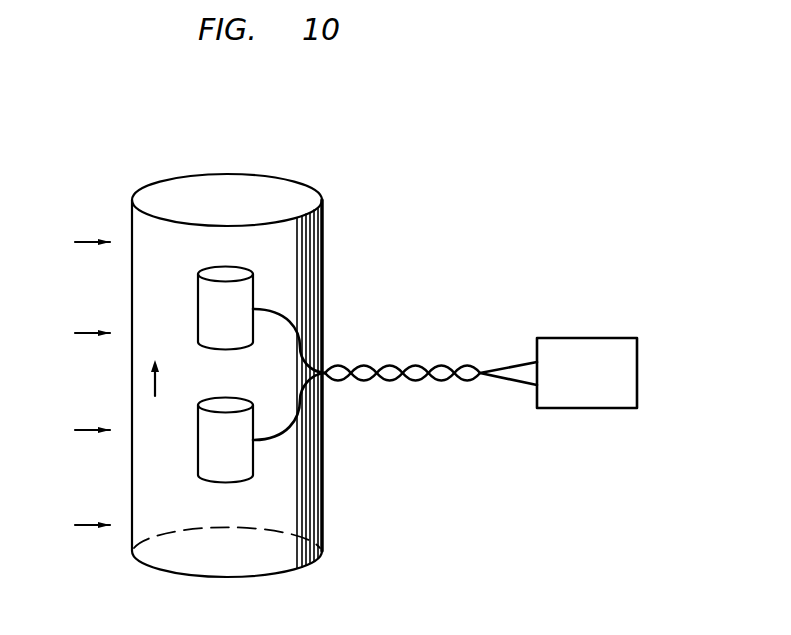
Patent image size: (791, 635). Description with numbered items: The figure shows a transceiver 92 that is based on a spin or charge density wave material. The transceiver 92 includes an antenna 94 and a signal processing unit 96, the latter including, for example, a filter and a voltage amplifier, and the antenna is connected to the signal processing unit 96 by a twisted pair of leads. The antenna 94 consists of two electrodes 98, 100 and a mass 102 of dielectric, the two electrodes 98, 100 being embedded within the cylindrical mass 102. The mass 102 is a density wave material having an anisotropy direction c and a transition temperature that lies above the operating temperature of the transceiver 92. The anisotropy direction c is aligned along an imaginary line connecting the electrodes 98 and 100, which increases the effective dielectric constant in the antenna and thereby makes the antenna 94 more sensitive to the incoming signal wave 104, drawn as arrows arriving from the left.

The transceiver 92 is at (407, 155).
The antenna 94 is at (265, 177).
The signal processing unit 96 is at (600, 388).
The electrode 98 is at (221, 348).
The electrode 100 is at (221, 482).
The mass of dielectric 102 is at (245, 212).
The incoming signal wave 104 is at (109, 393).